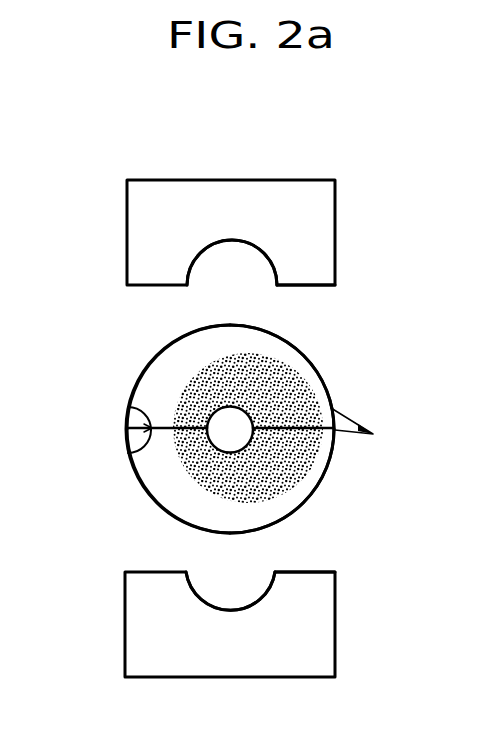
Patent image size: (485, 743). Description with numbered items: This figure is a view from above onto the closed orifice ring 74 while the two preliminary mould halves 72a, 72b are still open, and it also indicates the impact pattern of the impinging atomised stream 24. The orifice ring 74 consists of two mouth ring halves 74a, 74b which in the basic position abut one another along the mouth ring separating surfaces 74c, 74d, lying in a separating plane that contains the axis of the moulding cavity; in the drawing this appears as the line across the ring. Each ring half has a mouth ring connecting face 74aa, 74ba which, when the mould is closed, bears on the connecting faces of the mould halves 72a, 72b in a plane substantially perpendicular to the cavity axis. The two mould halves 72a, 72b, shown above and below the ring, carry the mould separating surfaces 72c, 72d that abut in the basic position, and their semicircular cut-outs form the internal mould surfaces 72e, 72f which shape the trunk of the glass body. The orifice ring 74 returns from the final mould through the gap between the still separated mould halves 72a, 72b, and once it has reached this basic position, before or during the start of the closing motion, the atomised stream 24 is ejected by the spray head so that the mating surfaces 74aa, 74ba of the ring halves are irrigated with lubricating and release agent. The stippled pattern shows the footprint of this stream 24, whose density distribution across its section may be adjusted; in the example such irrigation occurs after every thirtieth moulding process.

The preliminary mould half 72b is at (283, 188).
The internal mould surface 72f is at (240, 243).
The mould separating surface 72d is at (317, 291).
The orifice ring 74 is at (402, 447).
The atomised stream 24 is at (298, 380).
The orifice ring half 74b is at (165, 352).
The mouth ring connecting face 74ba is at (287, 345).
The orifice ring half 74a is at (168, 510).
The mouth ring connecting face 74aa is at (303, 495).
The mouth ring separating surface 74d is at (130, 409).
The mouth ring separating surface 74c is at (128, 447).
The preliminary mould half 72a is at (322, 632).
The mould separating surface 72c is at (317, 561).
The internal mould surface 72e is at (237, 614).